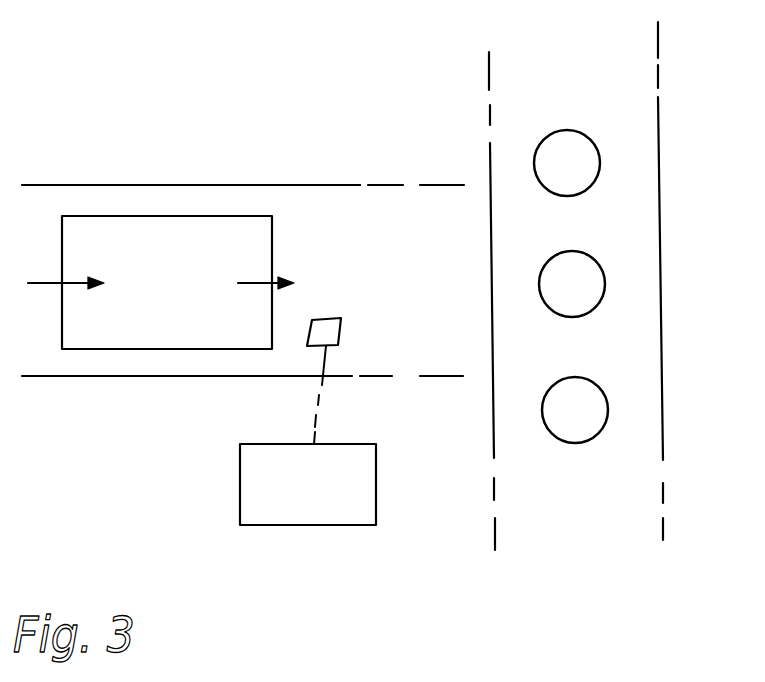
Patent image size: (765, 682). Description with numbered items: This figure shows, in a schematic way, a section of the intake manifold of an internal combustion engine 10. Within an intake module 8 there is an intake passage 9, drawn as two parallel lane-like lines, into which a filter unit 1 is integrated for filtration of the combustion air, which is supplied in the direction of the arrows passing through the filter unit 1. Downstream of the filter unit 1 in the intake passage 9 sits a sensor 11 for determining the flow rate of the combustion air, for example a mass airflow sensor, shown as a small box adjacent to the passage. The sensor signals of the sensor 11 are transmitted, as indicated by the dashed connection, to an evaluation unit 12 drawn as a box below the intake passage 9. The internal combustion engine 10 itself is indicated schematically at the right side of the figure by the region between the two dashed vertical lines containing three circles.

The filter unit 1 is at (147, 220).
The intake module 8 is at (74, 182).
The intake passage 9 is at (288, 182).
The internal combustion engine 10 is at (659, 154).
The sensor 11 is at (330, 331).
The evaluation unit 12 is at (365, 487).